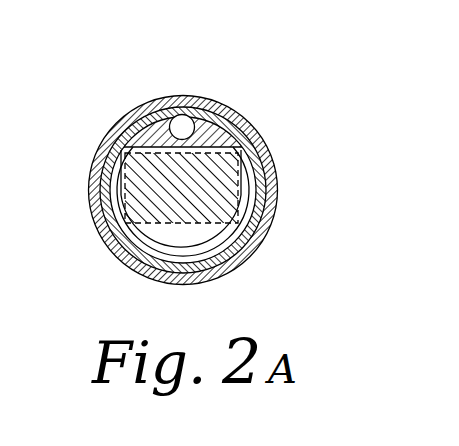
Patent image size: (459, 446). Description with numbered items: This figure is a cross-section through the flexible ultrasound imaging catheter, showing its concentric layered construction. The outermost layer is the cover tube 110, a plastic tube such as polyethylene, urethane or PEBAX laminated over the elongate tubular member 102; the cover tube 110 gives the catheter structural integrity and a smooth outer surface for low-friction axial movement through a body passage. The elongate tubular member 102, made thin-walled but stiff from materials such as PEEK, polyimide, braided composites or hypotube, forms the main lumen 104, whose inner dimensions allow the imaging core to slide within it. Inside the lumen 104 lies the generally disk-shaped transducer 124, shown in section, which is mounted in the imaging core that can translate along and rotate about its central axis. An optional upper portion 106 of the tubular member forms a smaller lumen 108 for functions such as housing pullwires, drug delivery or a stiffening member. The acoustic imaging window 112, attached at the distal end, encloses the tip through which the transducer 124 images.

The elongate tubular member 102 is at (108, 226).
The lumen 104 is at (221, 150).
The upper portion 106 is at (147, 118).
The smaller lumen 108 is at (182, 125).
The cover tube 110 is at (267, 198).
The acoustic imaging window 112 is at (228, 241).
The transducer 124 is at (133, 189).